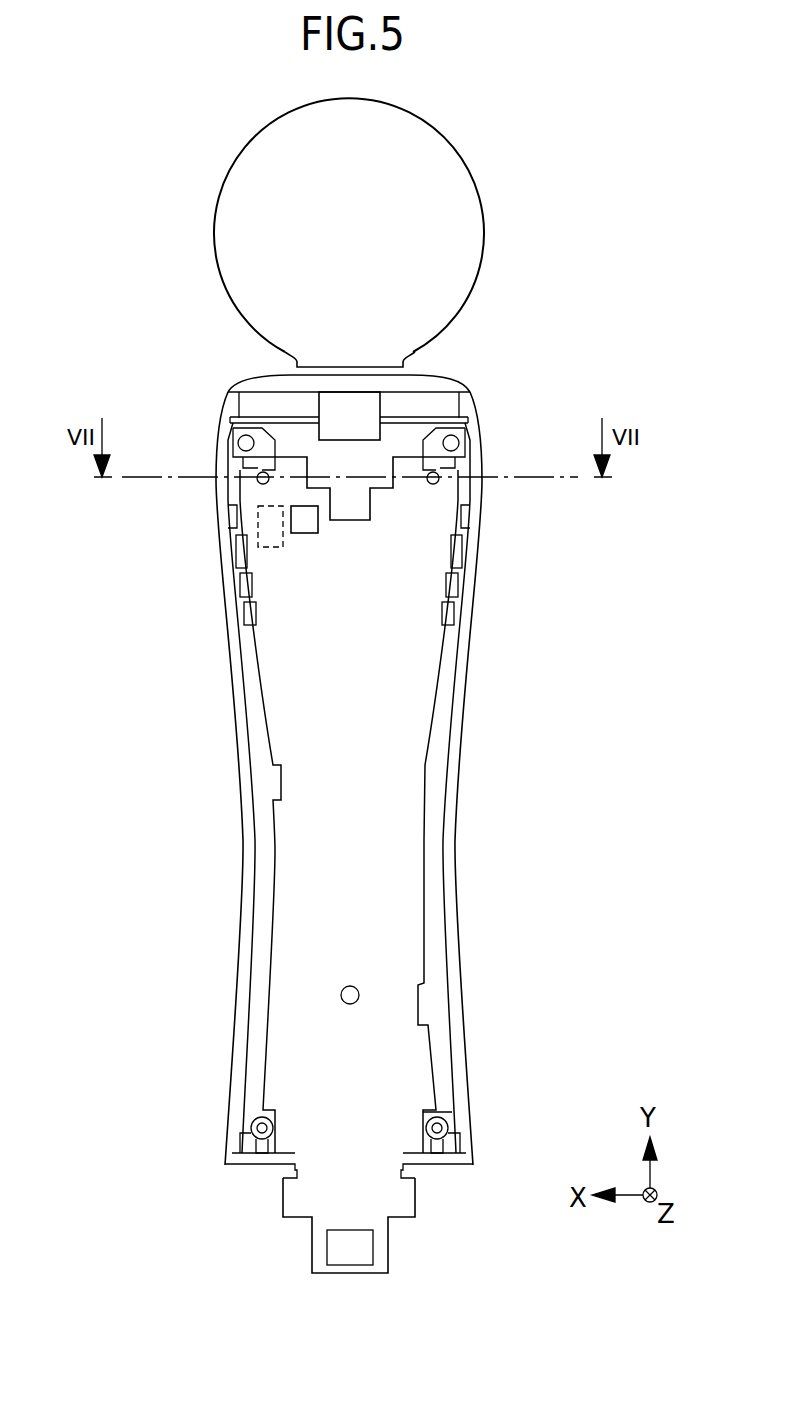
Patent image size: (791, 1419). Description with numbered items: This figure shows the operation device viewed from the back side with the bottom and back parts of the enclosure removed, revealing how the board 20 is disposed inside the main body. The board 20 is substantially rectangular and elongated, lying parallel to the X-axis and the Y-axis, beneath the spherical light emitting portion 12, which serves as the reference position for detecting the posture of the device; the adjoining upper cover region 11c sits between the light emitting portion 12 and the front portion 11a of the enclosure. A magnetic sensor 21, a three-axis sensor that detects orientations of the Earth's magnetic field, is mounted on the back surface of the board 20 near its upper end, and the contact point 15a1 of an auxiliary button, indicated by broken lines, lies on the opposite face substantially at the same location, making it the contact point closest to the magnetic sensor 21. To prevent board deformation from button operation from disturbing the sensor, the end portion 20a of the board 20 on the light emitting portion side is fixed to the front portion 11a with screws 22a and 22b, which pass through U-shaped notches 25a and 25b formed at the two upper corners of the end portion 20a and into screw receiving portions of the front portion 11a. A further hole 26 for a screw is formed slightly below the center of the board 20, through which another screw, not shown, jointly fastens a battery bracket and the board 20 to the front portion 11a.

The light emitting portion 12 is at (473, 208).
The upper cover portion of housing 11c is at (457, 381).
The front portion 11a is at (458, 853).
The board 20 is at (272, 868).
The end portion 20a is at (292, 468).
The notch 25a is at (232, 451).
The notch 25b is at (466, 458).
The screw 22a is at (257, 481).
The screw 22b is at (436, 489).
The contact point 15a1 is at (257, 538).
The magnetic sensor 21 is at (303, 527).
The hole 26 is at (360, 995).